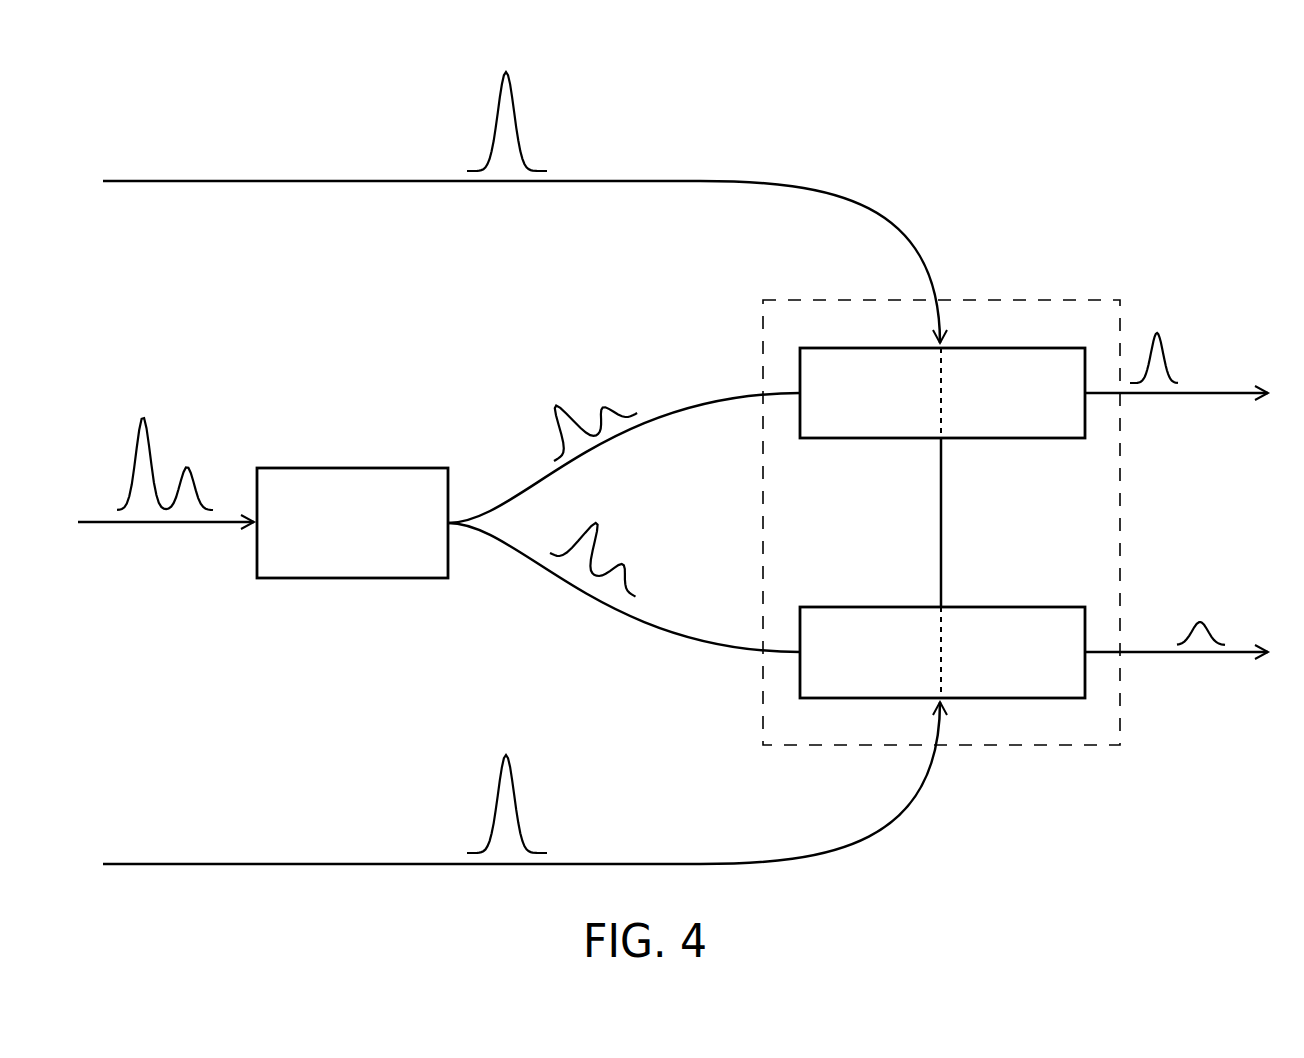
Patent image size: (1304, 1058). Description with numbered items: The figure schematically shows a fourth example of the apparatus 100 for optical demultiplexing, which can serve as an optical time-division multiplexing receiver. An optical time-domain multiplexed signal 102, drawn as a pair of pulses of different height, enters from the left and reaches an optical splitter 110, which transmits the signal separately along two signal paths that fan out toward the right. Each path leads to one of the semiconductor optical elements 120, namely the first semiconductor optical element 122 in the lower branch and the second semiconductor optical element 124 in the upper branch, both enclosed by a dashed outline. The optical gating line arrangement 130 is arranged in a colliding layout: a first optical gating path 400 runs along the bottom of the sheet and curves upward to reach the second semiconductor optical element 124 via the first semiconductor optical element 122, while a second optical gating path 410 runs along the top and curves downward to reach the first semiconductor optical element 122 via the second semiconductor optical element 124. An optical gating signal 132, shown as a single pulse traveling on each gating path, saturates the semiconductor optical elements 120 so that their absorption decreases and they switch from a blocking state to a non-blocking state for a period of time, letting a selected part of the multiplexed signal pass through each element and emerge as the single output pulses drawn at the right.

The apparatus 100 is at (1210, 140).
The optical time-domain multiplexed signal 102 is at (101, 457).
The optical splitter 110 is at (305, 461).
The semiconductor optical elements 120 is at (796, 293).
The first semiconductor optical element 122 is at (1072, 726).
The second semiconductor optical element 124 is at (1020, 319).
The optical gating line arrangement 130 is at (930, 810).
The optical gating signal 132 is at (466, 116).
The first optical gating path 400 is at (280, 870).
The second optical gating path 410 is at (291, 156).